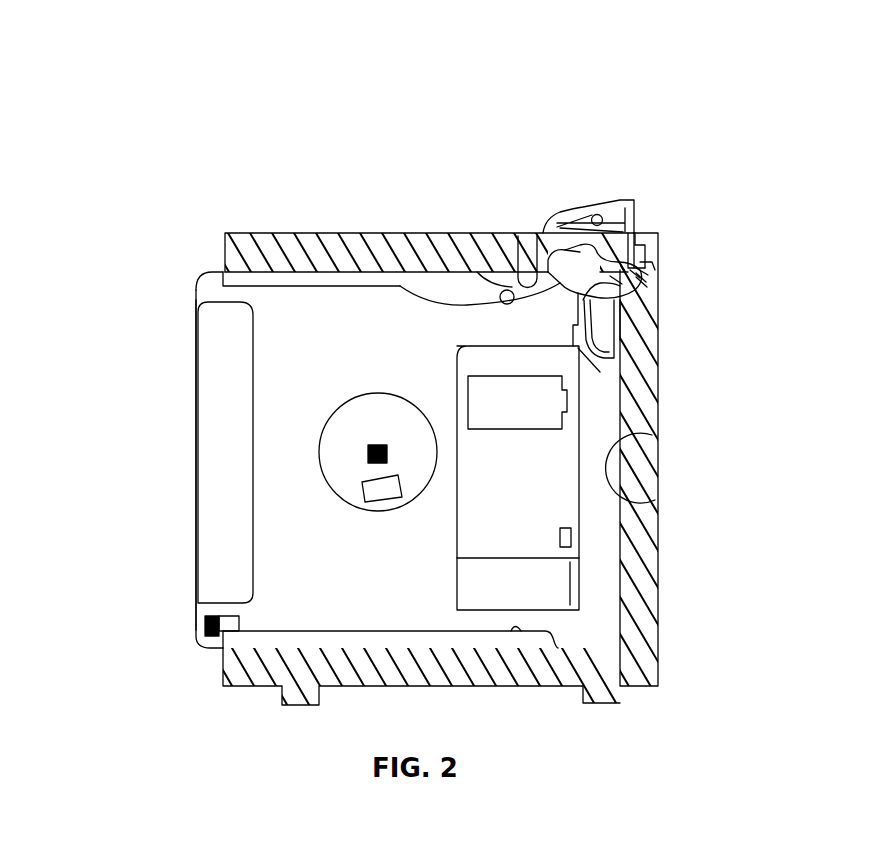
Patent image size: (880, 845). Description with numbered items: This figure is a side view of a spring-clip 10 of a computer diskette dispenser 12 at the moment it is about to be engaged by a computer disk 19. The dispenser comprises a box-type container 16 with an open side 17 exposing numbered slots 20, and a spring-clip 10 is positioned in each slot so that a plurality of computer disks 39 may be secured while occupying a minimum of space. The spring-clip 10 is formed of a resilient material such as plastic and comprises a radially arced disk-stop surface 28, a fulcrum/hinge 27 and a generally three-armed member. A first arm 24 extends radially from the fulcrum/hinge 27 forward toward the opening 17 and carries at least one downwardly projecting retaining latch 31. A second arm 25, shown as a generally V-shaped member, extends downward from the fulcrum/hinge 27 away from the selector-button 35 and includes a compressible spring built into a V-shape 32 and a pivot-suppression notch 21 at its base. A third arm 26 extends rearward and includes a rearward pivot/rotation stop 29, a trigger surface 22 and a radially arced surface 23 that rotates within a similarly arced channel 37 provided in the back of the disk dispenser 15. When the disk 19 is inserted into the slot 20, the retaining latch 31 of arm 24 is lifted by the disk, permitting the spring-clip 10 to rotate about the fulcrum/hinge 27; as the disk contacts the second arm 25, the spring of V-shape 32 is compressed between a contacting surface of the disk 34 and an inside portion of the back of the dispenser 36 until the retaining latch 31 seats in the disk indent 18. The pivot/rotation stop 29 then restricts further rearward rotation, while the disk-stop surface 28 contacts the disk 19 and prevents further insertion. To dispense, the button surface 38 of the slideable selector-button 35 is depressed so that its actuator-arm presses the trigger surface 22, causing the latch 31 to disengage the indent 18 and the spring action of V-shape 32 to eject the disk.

The spring-clip 10 is at (617, 280).
The computer diskette dispenser 12 is at (285, 163).
The back of disk dispenser 15 is at (658, 442).
The box-type container 16 is at (277, 234).
The open side 17 is at (223, 272).
The disk indent 18 is at (530, 272).
The computer disk 19 is at (226, 460).
The numbered slot 20 is at (223, 277).
The pivot-suppression notch 21 is at (627, 285).
The trigger surface 22 is at (643, 272).
The radially arced surface 23 is at (642, 275).
The first arm 24 is at (572, 250).
The second arm 25 is at (622, 298).
The third arm 26 is at (643, 277).
The fulcrum/hinge 27 is at (642, 238).
The radially arced disk-stop surface 28 is at (432, 301).
The rearward pivot/rotation stop 29 is at (655, 268).
The retaining latch 31 is at (528, 275).
The V-shape spring 32 is at (647, 250).
The contacting surface of disk 34 is at (600, 372).
The selector-button 35 is at (634, 200).
The inside portion of the back of disk dispenser 36 is at (645, 495).
The arced channel 37 is at (637, 270).
The button surface 38 is at (604, 200).
The plurality of computer disks 39 is at (197, 441).